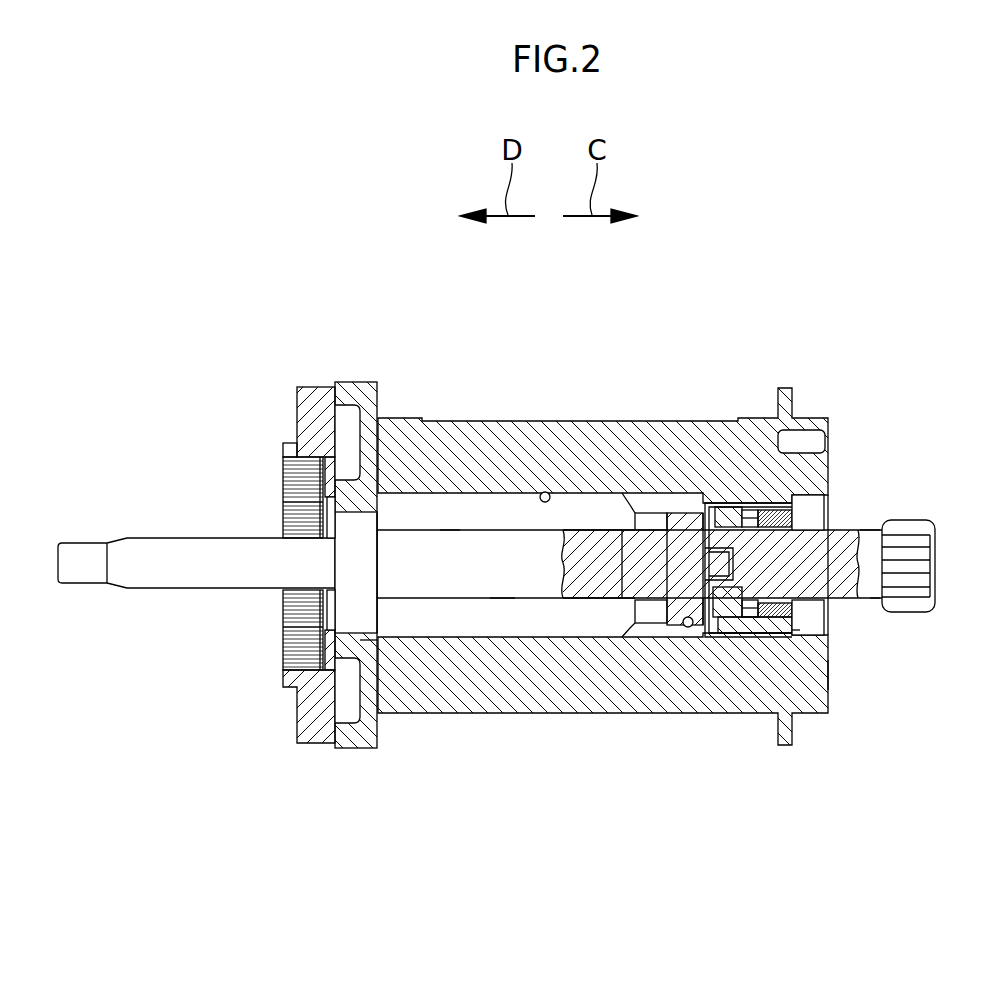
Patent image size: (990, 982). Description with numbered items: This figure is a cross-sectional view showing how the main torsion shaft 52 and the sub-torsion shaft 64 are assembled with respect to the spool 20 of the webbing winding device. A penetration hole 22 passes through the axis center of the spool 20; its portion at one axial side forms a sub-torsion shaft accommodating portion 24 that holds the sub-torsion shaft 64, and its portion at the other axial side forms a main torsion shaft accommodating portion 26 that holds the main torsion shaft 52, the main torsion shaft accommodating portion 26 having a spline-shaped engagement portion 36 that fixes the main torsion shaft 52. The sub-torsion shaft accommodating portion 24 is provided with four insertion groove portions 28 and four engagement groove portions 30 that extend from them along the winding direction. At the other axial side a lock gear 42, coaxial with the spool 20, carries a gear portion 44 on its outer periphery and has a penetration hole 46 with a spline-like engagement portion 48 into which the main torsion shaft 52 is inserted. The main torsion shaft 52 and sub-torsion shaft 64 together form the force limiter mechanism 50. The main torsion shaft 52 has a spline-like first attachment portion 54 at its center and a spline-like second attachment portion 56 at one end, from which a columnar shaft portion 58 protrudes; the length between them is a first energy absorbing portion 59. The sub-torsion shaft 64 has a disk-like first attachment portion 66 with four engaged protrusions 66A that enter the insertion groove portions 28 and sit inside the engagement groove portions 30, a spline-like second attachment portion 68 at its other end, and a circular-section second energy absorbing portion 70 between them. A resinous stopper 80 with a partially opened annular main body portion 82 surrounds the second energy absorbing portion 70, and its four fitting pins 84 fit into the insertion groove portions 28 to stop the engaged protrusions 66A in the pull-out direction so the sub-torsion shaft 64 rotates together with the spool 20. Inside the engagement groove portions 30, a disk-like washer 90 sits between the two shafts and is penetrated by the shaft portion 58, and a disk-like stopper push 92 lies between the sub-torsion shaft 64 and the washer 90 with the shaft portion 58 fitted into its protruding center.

The spool 20 is at (614, 412).
The penetration hole 22 is at (545, 492).
The sub-torsion shaft accommodating portion 24 is at (800, 527).
The main torsion shaft accommodating portion 26 is at (480, 510).
The insertion groove portion 28 is at (830, 672).
The engagement groove portion 30 is at (720, 502).
The engagement portion 36 is at (690, 627).
The lock gear 42 is at (288, 719).
The gear portion 44 is at (358, 750).
The penetration hole 46 is at (413, 704).
The engagement portion 48 is at (368, 645).
The force limiter mechanism 50 is at (503, 610).
The main torsion shaft 52 is at (538, 683).
The first attachment portion 54 is at (283, 502).
The second attachment portion 56 is at (688, 510).
The shaft portion 58 is at (724, 562).
The first energy absorbing portion 59 is at (440, 530).
The sub-torsion shaft 64 is at (871, 520).
The first attachment portion 66 is at (735, 605).
The engaged protrusion 66A is at (746, 505).
The second attachment portion 68 is at (912, 520).
The second energy absorbing portion 70 is at (870, 600).
The stopper 80 is at (808, 631).
The main body portion 82 is at (803, 622).
The fitting pin 84 is at (752, 637).
The washer 90 is at (720, 635).
The stopper push 92 is at (727, 637).